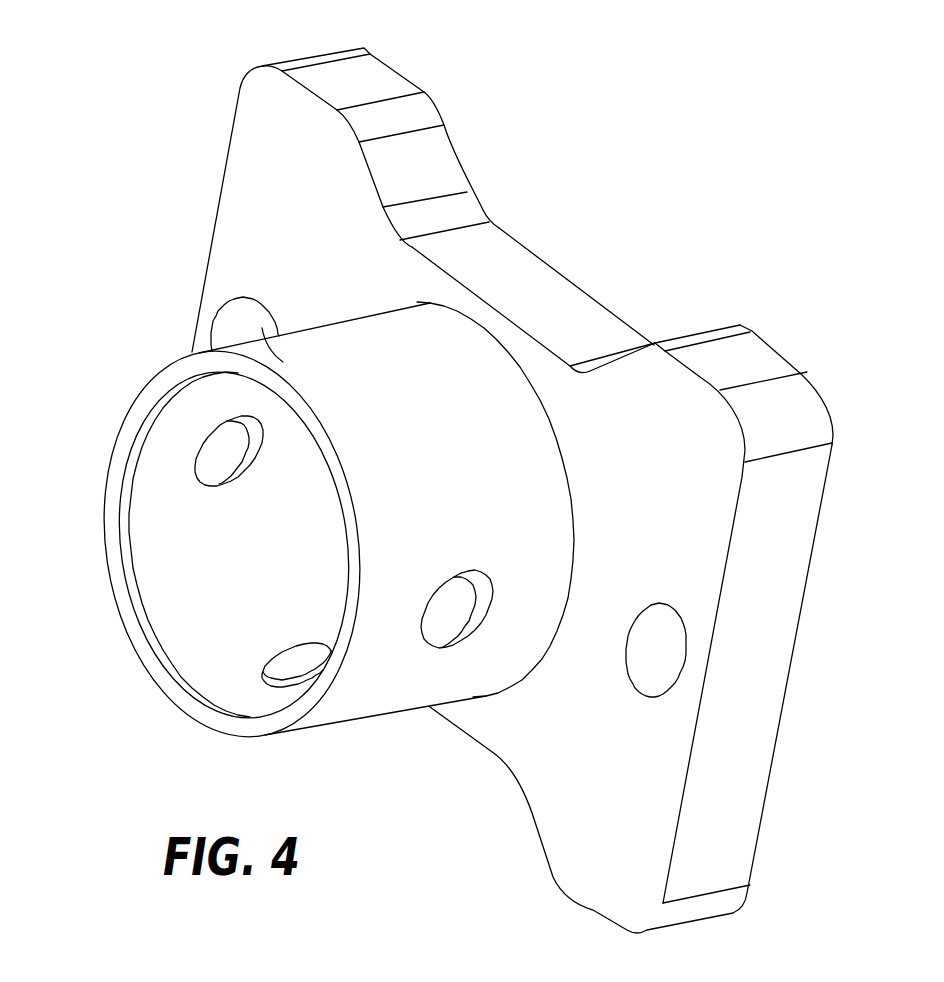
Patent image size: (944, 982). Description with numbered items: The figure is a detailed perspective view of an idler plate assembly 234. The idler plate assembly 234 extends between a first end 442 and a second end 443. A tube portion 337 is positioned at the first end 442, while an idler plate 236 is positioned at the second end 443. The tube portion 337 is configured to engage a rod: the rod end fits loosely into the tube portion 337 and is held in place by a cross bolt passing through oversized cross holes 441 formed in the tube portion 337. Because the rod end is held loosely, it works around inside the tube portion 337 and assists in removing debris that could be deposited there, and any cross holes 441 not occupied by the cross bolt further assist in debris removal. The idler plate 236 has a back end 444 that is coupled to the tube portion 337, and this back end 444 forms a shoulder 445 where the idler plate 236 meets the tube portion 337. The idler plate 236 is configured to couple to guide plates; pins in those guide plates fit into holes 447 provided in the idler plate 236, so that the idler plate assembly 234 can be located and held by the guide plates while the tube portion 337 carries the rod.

The idler plate assembly 234 is at (717, 226).
The idler plate 236 is at (553, 299).
The tube portion 337 is at (275, 337).
The cross holes 441 is at (239, 497).
The first end 442 is at (110, 453).
The second end 443 is at (785, 685).
The back end 444 is at (245, 152).
The shoulder 445 is at (422, 303).
The holes 447 is at (255, 308).